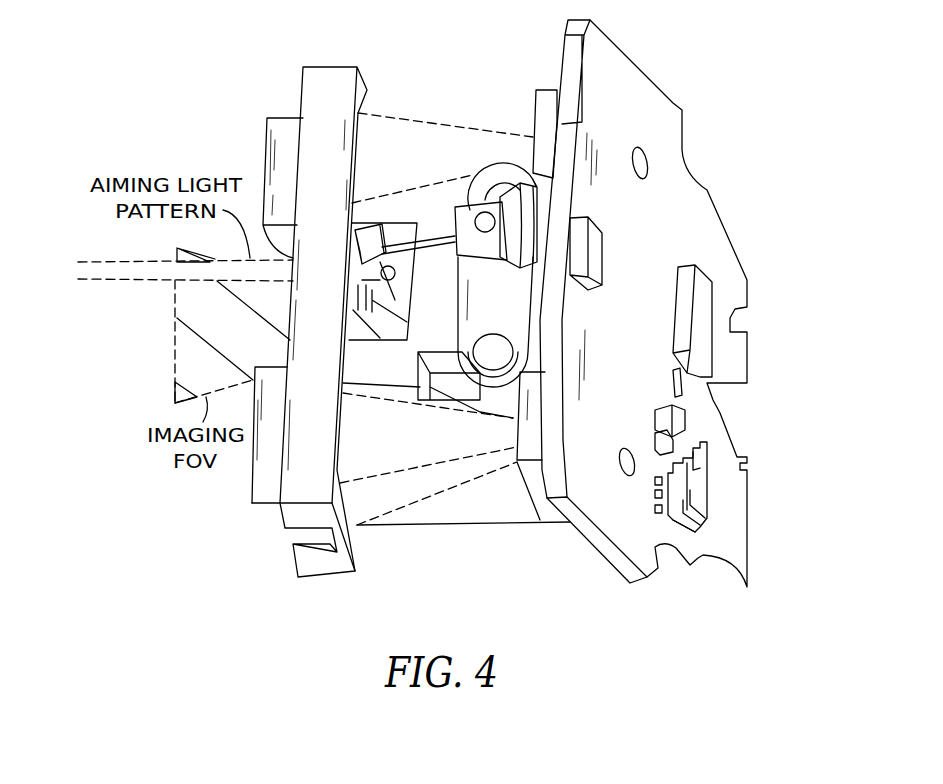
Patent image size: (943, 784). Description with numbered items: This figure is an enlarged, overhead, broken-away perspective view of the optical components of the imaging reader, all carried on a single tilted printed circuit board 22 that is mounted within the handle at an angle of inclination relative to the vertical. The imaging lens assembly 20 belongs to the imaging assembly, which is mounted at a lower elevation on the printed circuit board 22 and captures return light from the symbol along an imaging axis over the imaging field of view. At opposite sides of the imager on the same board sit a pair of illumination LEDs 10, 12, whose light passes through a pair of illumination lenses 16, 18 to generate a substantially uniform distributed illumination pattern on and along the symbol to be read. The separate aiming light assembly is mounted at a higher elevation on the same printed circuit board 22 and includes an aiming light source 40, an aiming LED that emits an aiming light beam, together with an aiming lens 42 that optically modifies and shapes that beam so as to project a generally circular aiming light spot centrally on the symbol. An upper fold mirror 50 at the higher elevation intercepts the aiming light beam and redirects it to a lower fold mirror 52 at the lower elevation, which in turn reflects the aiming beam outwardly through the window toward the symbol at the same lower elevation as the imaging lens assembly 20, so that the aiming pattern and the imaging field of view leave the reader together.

The illumination LED 10 is at (552, 88).
The illumination LED 12 is at (548, 515).
The illumination lens 16 is at (287, 118).
The illumination lens 18 is at (265, 518).
The imaging lens assembly 20 is at (437, 283).
The printed circuit board 22 is at (602, 52).
The aiming light source 40 is at (533, 198).
The aiming lens 42 is at (467, 227).
The upper fold mirror 50 is at (382, 230).
The lower fold mirror 52 is at (407, 243).